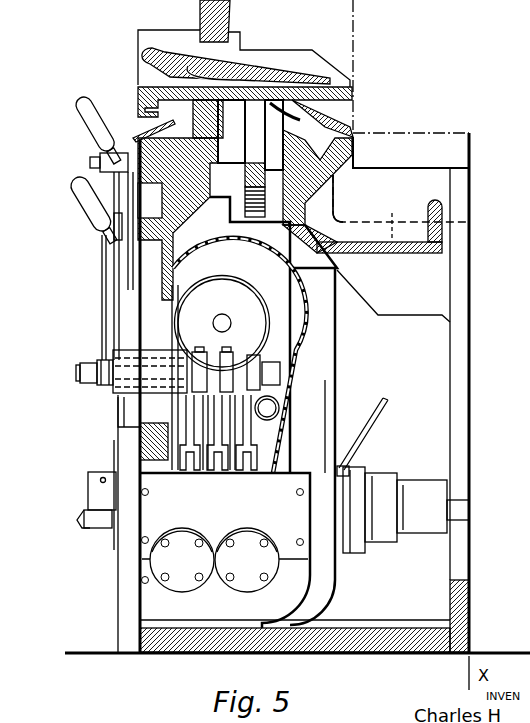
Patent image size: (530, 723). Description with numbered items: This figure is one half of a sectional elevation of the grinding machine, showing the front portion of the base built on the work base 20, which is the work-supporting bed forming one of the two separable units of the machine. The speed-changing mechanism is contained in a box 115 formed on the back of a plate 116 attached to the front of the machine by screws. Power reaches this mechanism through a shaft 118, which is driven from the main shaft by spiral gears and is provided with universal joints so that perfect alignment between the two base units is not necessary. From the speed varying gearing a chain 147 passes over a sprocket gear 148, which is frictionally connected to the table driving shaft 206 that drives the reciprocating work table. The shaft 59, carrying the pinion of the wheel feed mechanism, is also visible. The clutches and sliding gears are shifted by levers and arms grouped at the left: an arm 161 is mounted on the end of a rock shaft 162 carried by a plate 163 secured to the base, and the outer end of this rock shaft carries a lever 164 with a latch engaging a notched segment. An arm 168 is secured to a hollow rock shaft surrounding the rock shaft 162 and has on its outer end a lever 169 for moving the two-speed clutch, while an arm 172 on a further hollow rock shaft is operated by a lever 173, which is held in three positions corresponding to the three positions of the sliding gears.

The lever 173 is at (88, 118).
The lever 164 is at (86, 200).
The lever 169 is at (100, 222).
The sprocket gear 148 is at (185, 279).
The table driving shaft 206 is at (220, 322).
The rock shaft 162 is at (78, 373).
The plate 163 is at (135, 412).
The arm 172 is at (192, 413).
The arm 161 is at (248, 428).
The arm 168 is at (222, 447).
The plate 116 is at (128, 580).
The box 115 is at (205, 607).
The work base 20 is at (353, 625).
The shaft 118 is at (466, 508).
The shaft 59 is at (468, 238).
The chain 147 is at (278, 427).